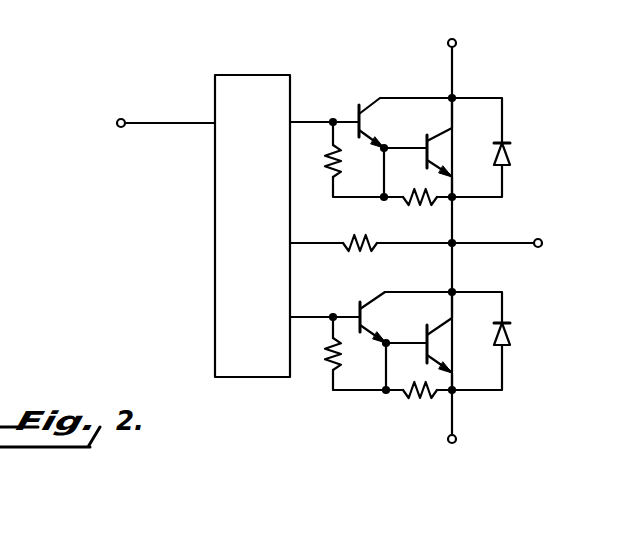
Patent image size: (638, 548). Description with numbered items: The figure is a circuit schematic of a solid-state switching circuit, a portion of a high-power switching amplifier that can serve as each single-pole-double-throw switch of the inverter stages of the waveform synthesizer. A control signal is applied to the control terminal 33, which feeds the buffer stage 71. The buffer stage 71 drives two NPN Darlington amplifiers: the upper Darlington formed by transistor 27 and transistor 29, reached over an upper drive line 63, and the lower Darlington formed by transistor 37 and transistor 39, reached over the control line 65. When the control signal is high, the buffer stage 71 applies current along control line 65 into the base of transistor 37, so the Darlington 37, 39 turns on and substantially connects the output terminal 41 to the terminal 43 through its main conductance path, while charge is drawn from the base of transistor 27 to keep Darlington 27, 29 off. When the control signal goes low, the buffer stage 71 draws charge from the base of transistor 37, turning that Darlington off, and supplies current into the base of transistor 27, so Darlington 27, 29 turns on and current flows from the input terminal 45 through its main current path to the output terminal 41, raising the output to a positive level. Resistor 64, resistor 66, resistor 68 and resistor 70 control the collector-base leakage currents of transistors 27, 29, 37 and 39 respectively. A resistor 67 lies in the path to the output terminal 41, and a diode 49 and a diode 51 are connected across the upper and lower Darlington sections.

The buffer stage 71 is at (243, 75).
The control terminal 33 is at (120, 127).
The upper drive line 63 is at (312, 119).
The control line 65 is at (310, 315).
The transistor 27 is at (368, 101).
The transistor 29 is at (442, 135).
The transistor 37 is at (374, 300).
The transistor 39 is at (442, 330).
The resistor 64 is at (327, 162).
The resistor 66 is at (412, 206).
The output resistor 67 is at (351, 233).
The resistor 68 is at (330, 364).
The resistor 70 is at (411, 399).
The input terminal 45 is at (452, 39).
The output terminal 41 is at (538, 239).
The terminal 43 is at (456, 439).
The diode 49 is at (508, 142).
The diode 51 is at (508, 322).